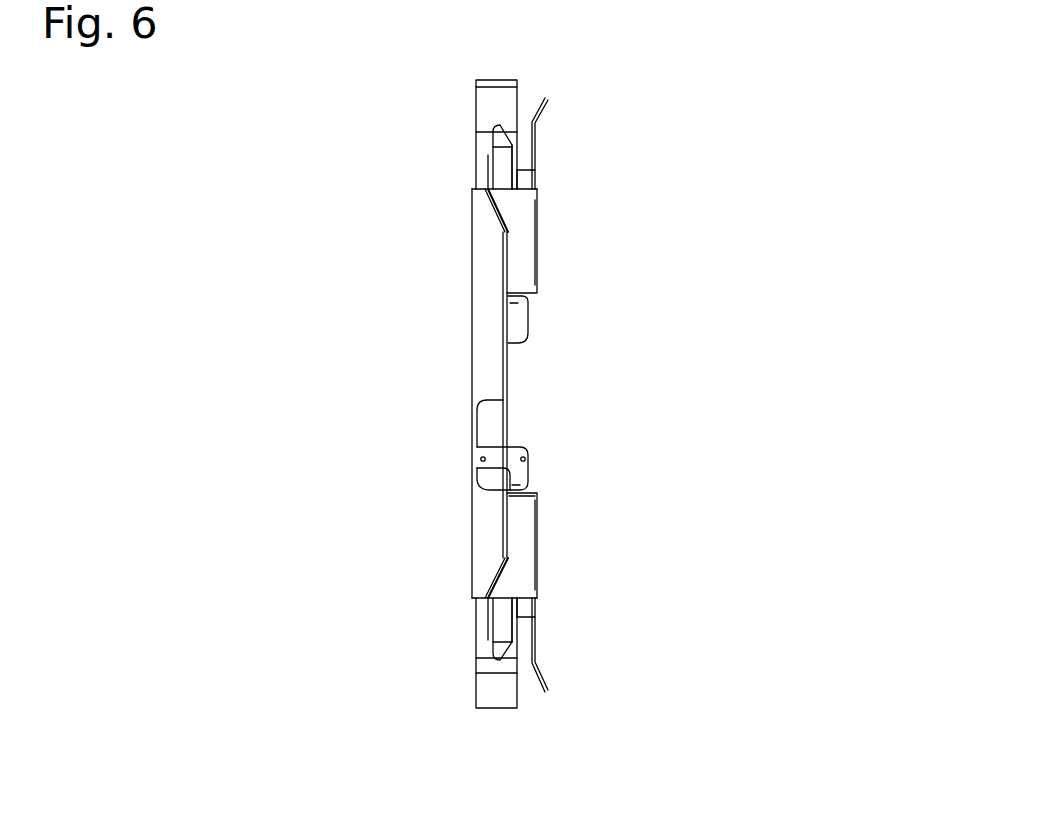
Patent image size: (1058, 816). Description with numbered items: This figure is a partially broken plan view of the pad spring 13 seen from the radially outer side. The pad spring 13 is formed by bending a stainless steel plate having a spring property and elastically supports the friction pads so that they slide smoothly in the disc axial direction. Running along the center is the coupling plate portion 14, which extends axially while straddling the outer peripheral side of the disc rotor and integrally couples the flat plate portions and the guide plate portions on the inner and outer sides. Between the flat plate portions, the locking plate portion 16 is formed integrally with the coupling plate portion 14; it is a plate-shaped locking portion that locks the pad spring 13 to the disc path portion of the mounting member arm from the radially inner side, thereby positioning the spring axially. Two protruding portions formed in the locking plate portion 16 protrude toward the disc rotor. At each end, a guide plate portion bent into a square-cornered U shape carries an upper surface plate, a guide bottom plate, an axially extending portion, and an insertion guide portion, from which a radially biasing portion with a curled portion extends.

The pad spring 13 is at (456, 406).
The coupling plate portion 14 is at (481, 356).
The locking plate portion 16 is at (500, 448).